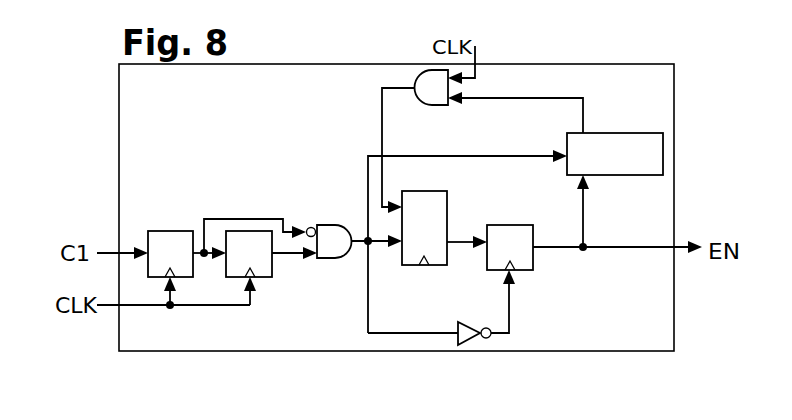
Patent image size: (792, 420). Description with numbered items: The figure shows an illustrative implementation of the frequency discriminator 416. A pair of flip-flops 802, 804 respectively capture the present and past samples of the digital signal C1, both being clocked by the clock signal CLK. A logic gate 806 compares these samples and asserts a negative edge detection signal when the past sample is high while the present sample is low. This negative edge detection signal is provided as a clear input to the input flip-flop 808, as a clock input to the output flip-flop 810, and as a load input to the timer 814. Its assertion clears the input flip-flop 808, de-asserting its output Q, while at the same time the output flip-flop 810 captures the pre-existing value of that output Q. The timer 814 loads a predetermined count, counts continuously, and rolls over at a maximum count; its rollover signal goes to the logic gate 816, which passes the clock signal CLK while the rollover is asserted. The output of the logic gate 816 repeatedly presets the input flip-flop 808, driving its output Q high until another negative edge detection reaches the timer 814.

The frequency discriminator 416 is at (168, 352).
The flip-flop 802 is at (180, 230).
The flip-flop 804 is at (260, 278).
The logic gate 806 is at (328, 223).
The input flip-flop 808 is at (413, 265).
The output flip-flop 810 is at (487, 270).
The timer 814 is at (625, 177).
The logic gate 816 is at (425, 108).